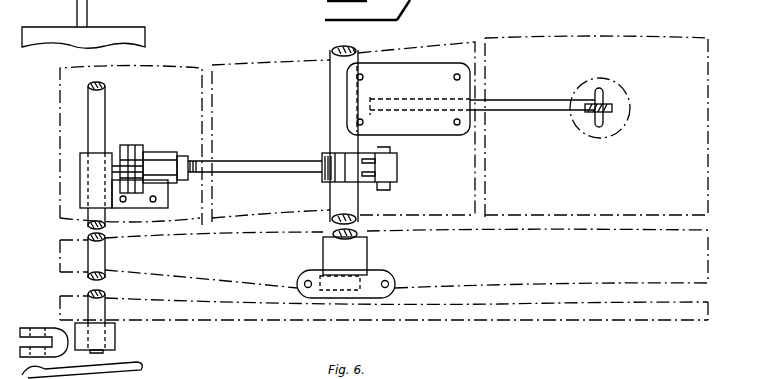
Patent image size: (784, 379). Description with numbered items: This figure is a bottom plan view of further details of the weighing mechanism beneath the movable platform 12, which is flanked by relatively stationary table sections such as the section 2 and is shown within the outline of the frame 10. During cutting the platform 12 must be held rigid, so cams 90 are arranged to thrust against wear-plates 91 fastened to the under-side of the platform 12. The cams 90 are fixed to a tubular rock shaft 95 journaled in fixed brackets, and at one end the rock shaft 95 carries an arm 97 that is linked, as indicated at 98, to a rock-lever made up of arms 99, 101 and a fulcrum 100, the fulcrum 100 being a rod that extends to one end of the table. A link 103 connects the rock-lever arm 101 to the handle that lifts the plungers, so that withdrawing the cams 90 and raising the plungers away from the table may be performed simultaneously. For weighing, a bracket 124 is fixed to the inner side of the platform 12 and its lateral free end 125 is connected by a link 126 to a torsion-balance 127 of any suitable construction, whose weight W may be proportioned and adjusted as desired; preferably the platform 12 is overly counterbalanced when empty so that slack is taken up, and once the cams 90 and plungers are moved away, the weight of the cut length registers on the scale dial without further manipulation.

The weight W is at (140, 33).
The machine frame 10 is at (210, 68).
The platform 12 is at (278, 62).
The relatively stationary section of the table 2 is at (580, 45).
The tubular rock shaft 95 is at (336, 130).
The arm 97 is at (397, 167).
The link 98 is at (147, 172).
The rock-lever arm 99 is at (142, 160).
The fulcrum 100 is at (106, 276).
The rock-lever arm 101 is at (43, 330).
The link 103 is at (124, 373).
The cam 90 is at (352, 270).
The wear-plate 91 is at (387, 272).
The bracket 124 is at (512, 110).
The lateral free end 125 is at (612, 108).
The link 126 is at (603, 98).
The torsion-balance 127 is at (615, 128).